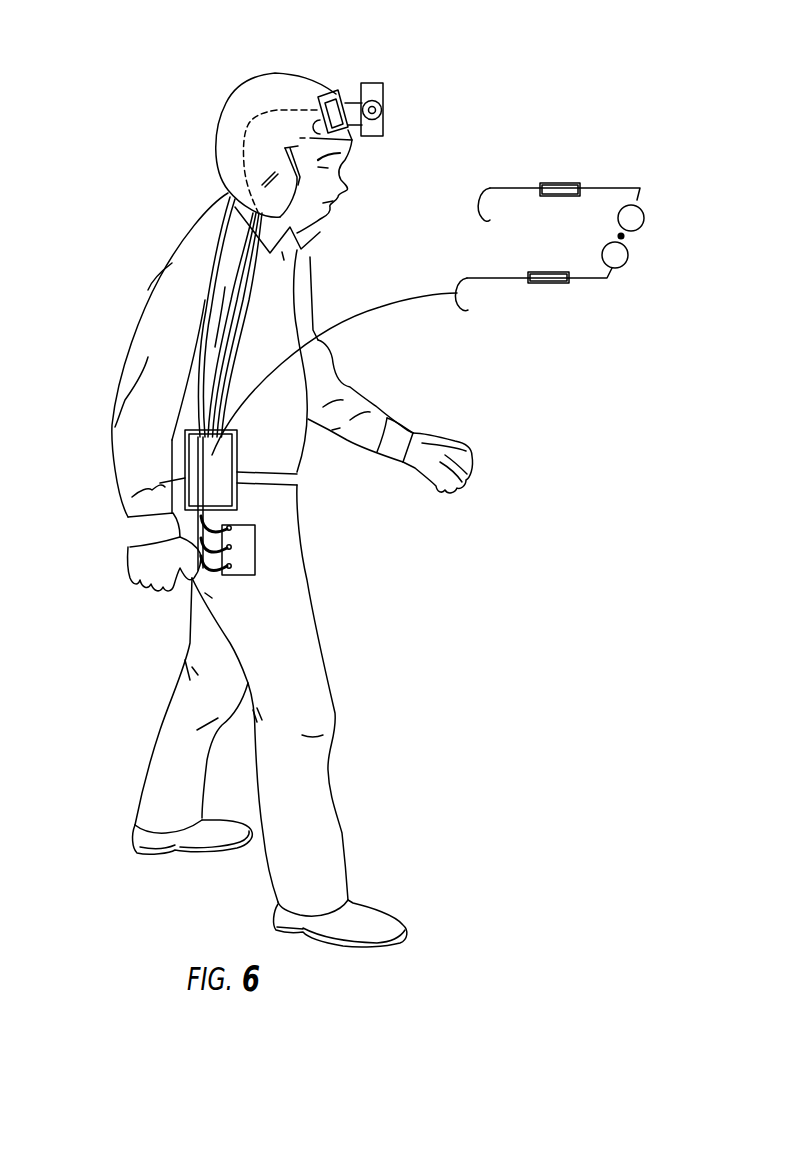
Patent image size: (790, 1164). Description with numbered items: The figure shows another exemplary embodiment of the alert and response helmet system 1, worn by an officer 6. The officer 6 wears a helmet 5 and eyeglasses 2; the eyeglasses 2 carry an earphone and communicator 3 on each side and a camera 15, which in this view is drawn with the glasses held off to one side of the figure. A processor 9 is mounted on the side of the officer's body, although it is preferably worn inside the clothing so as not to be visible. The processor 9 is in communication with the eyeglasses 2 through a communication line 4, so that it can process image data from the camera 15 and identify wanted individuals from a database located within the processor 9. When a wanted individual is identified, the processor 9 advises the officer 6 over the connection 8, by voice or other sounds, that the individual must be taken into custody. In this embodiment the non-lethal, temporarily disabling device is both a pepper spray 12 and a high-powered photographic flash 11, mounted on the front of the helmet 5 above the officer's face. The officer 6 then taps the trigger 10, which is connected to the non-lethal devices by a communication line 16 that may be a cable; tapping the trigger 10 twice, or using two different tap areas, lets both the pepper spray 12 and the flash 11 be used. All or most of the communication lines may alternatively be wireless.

The alert and response helmet system 1 is at (465, 355).
The eyeglasses 2 is at (610, 188).
The eyeglass earphones and communicator 3 is at (548, 183).
The connection between the processor and the eyeglasses 4 is at (362, 313).
The helmet 5 is at (300, 72).
The officer 6 is at (333, 218).
The connection between the processor and the non-lethal devices, eyeglass earphone a 8 is at (252, 245).
The processor 9 is at (215, 473).
The trigger 10 is at (232, 563).
The high-power photograph flash lamp 11 is at (372, 77).
The pepper spray device 12 is at (338, 85).
The camera 15 is at (627, 239).
The connection between the trigger and the non-lethal device 16 is at (200, 298).